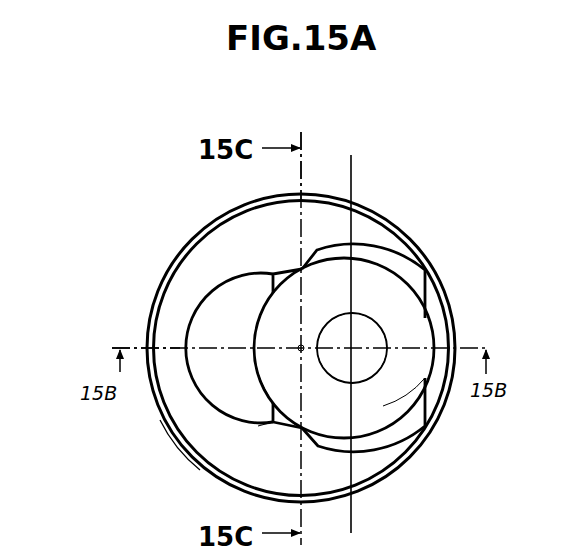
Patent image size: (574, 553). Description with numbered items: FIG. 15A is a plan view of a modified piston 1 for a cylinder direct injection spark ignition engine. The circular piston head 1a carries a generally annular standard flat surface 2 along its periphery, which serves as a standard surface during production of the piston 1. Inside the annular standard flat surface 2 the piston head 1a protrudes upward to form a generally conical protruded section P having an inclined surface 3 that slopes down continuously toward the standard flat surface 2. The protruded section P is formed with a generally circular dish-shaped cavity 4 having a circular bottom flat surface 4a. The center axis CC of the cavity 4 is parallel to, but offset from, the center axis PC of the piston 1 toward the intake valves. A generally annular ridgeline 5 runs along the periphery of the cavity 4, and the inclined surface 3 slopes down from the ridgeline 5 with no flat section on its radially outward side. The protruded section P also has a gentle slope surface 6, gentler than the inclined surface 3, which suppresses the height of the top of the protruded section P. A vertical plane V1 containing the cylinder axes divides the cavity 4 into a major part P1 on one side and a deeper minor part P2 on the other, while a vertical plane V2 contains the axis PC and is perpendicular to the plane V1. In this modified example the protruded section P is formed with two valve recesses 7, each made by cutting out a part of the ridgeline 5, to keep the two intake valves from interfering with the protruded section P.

The piston 1 is at (381, 196).
The piston head 1a is at (410, 227).
The annular standard flat surface 2 is at (184, 439).
The inclined surface 3 is at (257, 400).
The cavity 4 is at (383, 406).
The bottom flat surface 4a is at (373, 341).
The ridgeline 5 is at (258, 426).
The gentle slope surface 6 is at (215, 297).
The valve recess 7 is at (385, 262).
The protruded section P is at (168, 399).
The major part of the cavity P1 is at (416, 320).
The minor part of the cavity P2 is at (212, 300).
The center axis of the piston PC is at (303, 348).
The center axis of the cavity CC is at (355, 344).
The vertical plane V1 is at (302, 175).
The vertical plane V2 is at (122, 346).